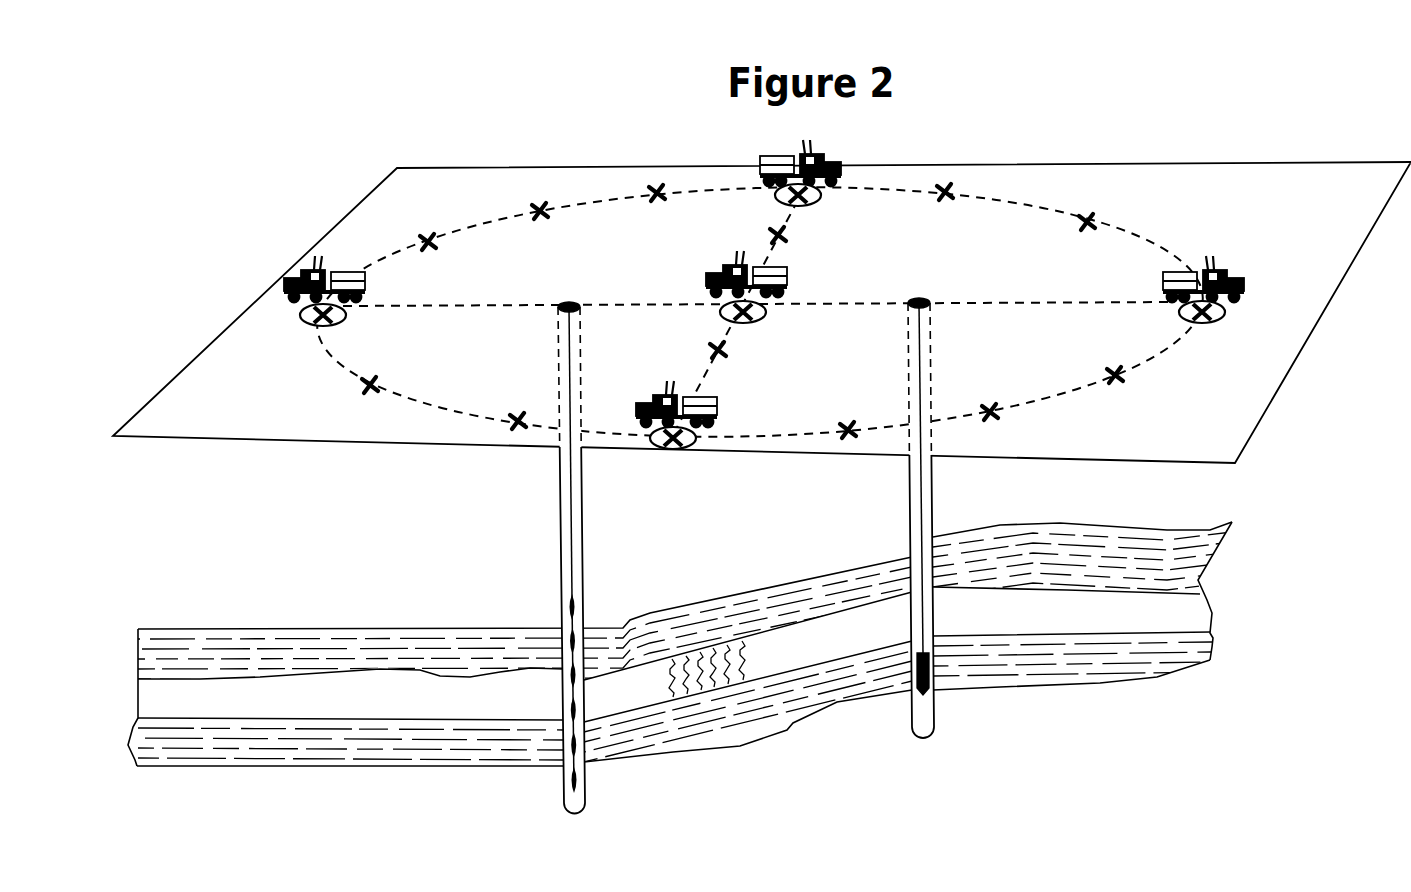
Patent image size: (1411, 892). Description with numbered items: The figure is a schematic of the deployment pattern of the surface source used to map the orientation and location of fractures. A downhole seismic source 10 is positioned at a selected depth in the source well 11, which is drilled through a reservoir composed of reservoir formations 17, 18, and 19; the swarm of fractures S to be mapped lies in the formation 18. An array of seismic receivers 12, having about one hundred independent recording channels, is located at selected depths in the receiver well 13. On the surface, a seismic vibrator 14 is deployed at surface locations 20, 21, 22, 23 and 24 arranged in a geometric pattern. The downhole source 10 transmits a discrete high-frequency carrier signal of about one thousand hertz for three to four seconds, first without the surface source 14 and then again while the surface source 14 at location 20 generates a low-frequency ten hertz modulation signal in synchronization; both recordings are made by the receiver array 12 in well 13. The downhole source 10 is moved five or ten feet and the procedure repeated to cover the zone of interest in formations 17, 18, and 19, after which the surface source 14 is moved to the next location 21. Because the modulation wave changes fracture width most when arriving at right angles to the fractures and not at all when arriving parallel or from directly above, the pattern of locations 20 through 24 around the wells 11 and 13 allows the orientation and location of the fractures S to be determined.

The downhole seismic source 10 is at (931, 681).
The source well 11 is at (930, 502).
The array of seismic receivers 12 is at (581, 779).
The receiver well 13 is at (581, 540).
The surface seismic vibrator 14 is at (1229, 270).
The reservoir formation 17 is at (684, 704).
The reservoir formation 18 is at (674, 676).
The reservoir formation 19 is at (680, 644).
The surface location 20 is at (1200, 325).
The surface location 21 is at (807, 204).
The surface location 22 is at (333, 326).
The surface location 23 is at (657, 451).
The surface location 24 is at (752, 324).
The swarm of fractures S is at (717, 698).